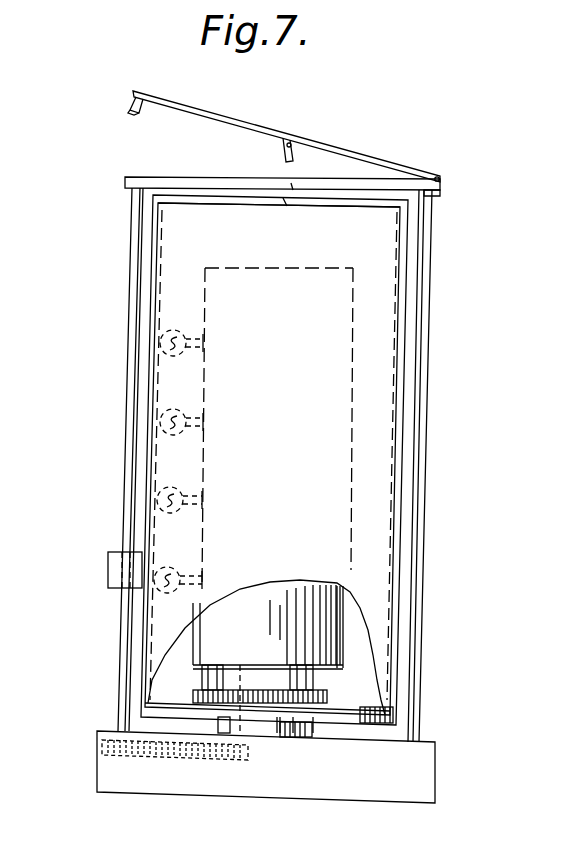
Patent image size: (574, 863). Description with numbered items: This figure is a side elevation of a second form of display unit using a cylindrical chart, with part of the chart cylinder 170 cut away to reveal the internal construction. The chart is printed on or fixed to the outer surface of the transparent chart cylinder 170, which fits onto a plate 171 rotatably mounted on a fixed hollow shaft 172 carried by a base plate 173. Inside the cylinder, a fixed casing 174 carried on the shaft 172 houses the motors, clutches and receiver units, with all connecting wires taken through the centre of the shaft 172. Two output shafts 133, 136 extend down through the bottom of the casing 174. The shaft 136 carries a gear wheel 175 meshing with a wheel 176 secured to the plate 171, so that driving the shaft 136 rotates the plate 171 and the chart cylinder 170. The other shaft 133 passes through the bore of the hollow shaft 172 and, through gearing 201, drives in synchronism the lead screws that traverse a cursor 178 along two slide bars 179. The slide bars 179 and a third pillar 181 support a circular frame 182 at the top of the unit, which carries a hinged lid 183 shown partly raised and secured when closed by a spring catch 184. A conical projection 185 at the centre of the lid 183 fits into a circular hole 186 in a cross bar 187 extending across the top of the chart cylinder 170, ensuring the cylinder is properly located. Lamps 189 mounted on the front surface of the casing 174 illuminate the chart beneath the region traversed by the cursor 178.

The output shaft 133 is at (228, 742).
The output shaft 136 is at (200, 675).
The chart cylinder 170 is at (385, 362).
The plate 171 is at (348, 722).
The hollow shaft 172 is at (272, 732).
The base plate 173 is at (412, 770).
The casing 174 is at (345, 592).
The gear wheel 175 is at (195, 696).
The wheel 176 is at (340, 692).
The cursor 178 is at (108, 572).
The slide bars 179 is at (130, 505).
The pillar 181 is at (428, 402).
The circular frame 182 is at (192, 178).
The hinged lid 183 is at (222, 113).
The spring catch 184 is at (132, 109).
The conical projection 185 is at (290, 145).
The circular hole 186 is at (287, 201).
The cross bar 187 is at (372, 203).
The lamps 189 is at (157, 417).
The gearing 201 is at (178, 740).